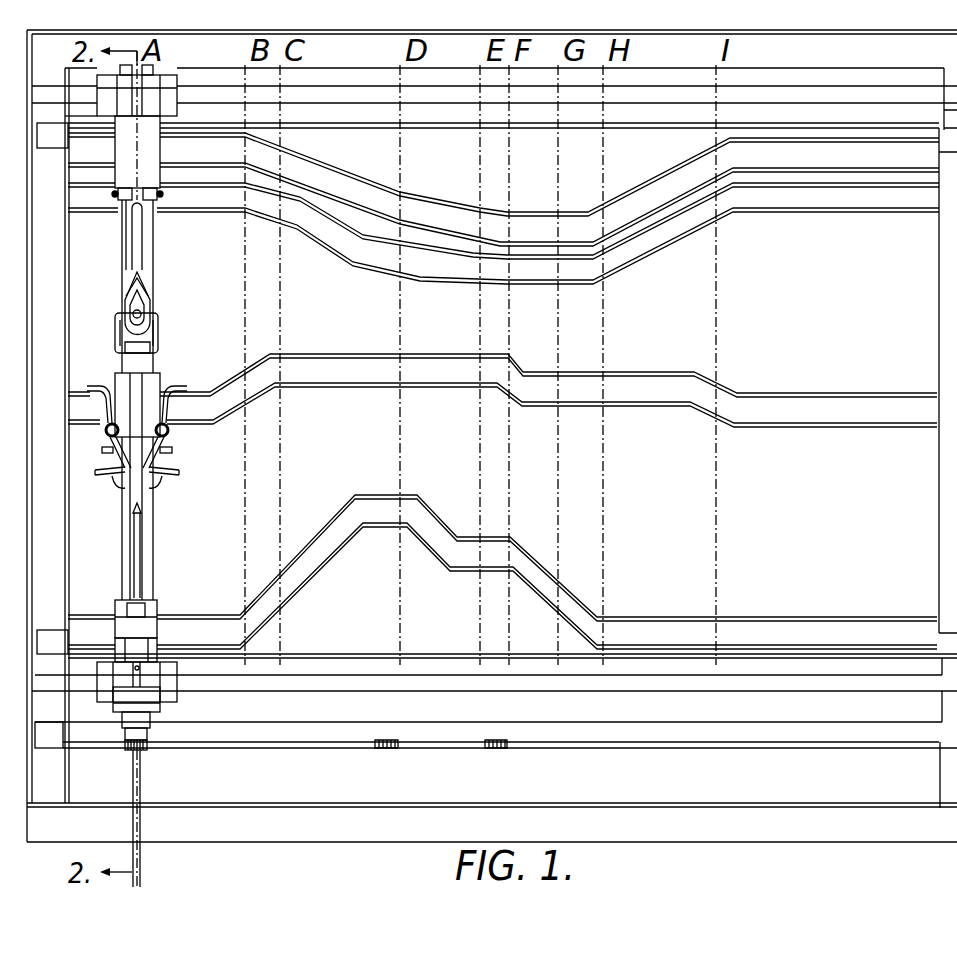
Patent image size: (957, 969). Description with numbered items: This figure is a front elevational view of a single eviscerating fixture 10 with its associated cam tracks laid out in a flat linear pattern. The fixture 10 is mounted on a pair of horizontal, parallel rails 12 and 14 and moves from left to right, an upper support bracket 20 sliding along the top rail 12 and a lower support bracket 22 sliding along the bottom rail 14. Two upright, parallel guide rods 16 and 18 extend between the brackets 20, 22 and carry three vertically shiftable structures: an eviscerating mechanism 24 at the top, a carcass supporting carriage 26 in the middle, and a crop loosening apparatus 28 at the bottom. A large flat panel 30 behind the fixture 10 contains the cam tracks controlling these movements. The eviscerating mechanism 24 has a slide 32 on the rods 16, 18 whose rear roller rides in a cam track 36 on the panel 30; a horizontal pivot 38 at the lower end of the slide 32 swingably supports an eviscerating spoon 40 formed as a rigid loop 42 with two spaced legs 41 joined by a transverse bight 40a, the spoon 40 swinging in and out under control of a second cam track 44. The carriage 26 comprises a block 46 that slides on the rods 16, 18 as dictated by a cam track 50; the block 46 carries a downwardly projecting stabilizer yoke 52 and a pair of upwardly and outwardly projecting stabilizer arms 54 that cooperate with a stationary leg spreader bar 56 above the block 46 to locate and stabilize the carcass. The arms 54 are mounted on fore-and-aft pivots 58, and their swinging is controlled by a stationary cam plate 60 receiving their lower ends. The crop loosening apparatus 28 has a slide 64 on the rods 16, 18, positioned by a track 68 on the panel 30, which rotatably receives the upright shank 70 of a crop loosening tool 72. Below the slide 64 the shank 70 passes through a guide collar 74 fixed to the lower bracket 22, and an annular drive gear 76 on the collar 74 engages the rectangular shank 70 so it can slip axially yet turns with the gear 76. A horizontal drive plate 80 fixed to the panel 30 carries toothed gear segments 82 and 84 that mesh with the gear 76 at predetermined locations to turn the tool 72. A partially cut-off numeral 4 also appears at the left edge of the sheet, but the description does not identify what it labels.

The edge numeral 4 is at (5, 212).
The eviscerating fixture 10 is at (186, 288).
The top rail 12 is at (303, 93).
The bottom rail 14 is at (497, 684).
The guide rod 16 is at (124, 236).
The guide rod 18 is at (148, 228).
The upper support bracket 20 is at (171, 100).
The lower support bracket 22 is at (168, 695).
The eviscerating mechanism 24 is at (112, 252).
The carcass supporting carriage 26 is at (172, 372).
The crop loosening apparatus 28 is at (167, 570).
The flat panel 30 is at (887, 380).
The slide 32 is at (148, 152).
The cam track 36 is at (290, 164).
The horizontal pivot 38 is at (163, 197).
The eviscerating spoon 40 is at (124, 263).
The transverse bight 40a is at (154, 343).
The legs 41 is at (152, 300).
The rigid loop 42 is at (155, 308).
The cam track 44 is at (317, 230).
The block 46 is at (120, 382).
The cam track 50 is at (261, 390).
The stabilizer yoke 52 is at (167, 480).
The stabilizer arms 54 is at (100, 403).
The leg spreader bar 56 is at (157, 328).
The fore-and-aft pivots 58 is at (107, 437).
The cam plate 60 is at (172, 452).
The slide 64 is at (120, 628).
The track 68 is at (180, 620).
The shank 70 is at (141, 542).
The crop loosening tool 72 is at (124, 526).
The guide collar 74 is at (128, 718).
The drive gear 76 is at (160, 748).
The drive plate 80 is at (287, 746).
The toothed gear segment 82 is at (383, 750).
The toothed gear segment 84 is at (498, 750).